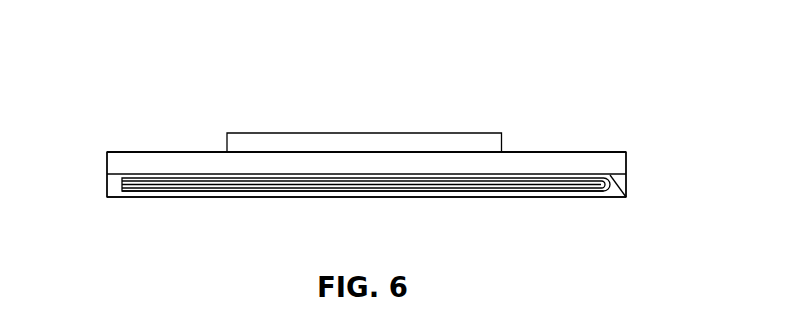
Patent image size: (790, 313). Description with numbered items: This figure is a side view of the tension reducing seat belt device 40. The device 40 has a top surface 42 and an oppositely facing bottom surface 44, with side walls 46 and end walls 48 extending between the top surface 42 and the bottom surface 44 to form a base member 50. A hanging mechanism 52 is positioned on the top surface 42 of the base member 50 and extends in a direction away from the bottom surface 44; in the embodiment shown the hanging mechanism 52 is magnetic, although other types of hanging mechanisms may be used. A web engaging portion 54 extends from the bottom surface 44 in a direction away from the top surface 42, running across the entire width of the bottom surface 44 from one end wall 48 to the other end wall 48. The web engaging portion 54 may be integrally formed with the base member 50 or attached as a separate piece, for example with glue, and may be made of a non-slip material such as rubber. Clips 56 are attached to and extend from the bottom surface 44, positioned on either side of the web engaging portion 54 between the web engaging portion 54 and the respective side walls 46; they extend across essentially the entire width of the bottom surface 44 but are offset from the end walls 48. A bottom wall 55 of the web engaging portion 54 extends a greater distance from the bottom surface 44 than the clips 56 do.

The tension reducing seat belt device 40 is at (324, 79).
The top surface 42 is at (527, 152).
The bottom surface 44 is at (626, 197).
The side walls 46 is at (107, 163).
The end walls 48 is at (182, 162).
The base member 50 is at (165, 136).
The hanging mechanism 52 is at (342, 133).
The web engaging portion 54 is at (583, 198).
The bottom wall 55 is at (383, 198).
The clips 56 is at (263, 211).